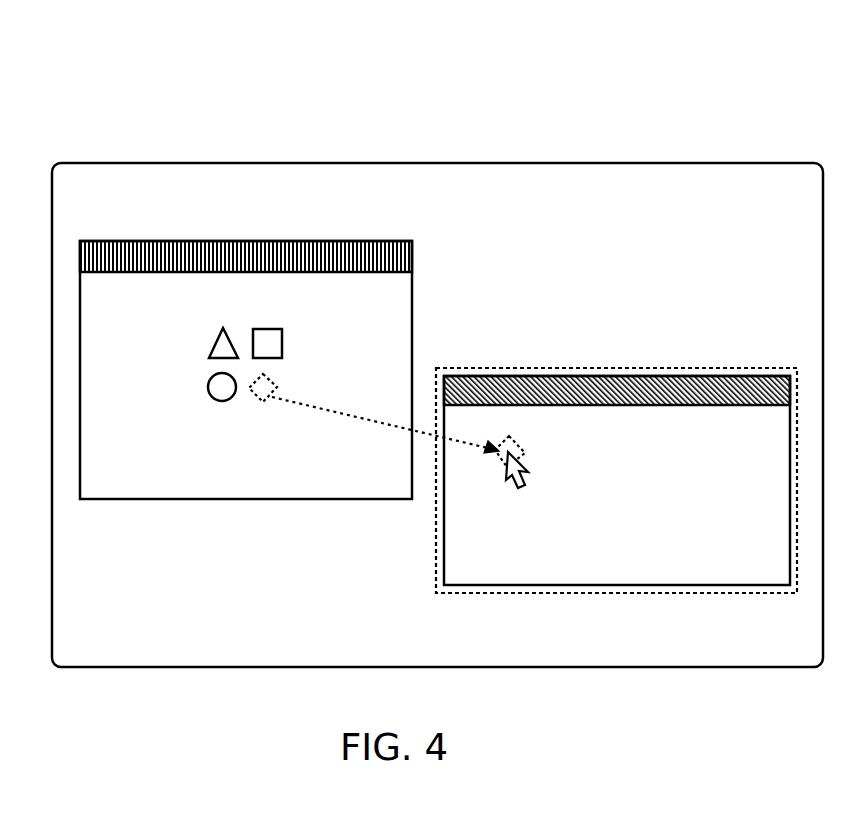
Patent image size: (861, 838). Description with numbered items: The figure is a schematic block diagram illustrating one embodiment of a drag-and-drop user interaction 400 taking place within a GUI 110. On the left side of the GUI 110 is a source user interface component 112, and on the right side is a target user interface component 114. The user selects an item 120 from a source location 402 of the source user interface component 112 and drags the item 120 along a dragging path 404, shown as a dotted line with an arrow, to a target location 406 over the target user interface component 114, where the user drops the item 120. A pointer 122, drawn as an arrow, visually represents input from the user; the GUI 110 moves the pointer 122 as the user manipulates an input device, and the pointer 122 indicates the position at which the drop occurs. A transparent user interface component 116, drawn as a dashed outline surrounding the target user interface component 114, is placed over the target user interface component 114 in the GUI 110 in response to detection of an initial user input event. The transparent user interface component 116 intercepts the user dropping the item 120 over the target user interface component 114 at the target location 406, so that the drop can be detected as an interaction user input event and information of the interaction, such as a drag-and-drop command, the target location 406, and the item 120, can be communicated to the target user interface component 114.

The drag-and-drop user interaction 400 is at (68, 65).
The GUI 110 is at (91, 167).
The source user interface component 112 is at (98, 248).
The target user interface component 114 is at (468, 380).
The transparent user interface component 116 is at (551, 368).
The item 120 is at (507, 439).
The pointer 122 is at (518, 478).
The source location 402 is at (262, 406).
The dragging path 404 is at (394, 429).
The target location 406 is at (526, 452).